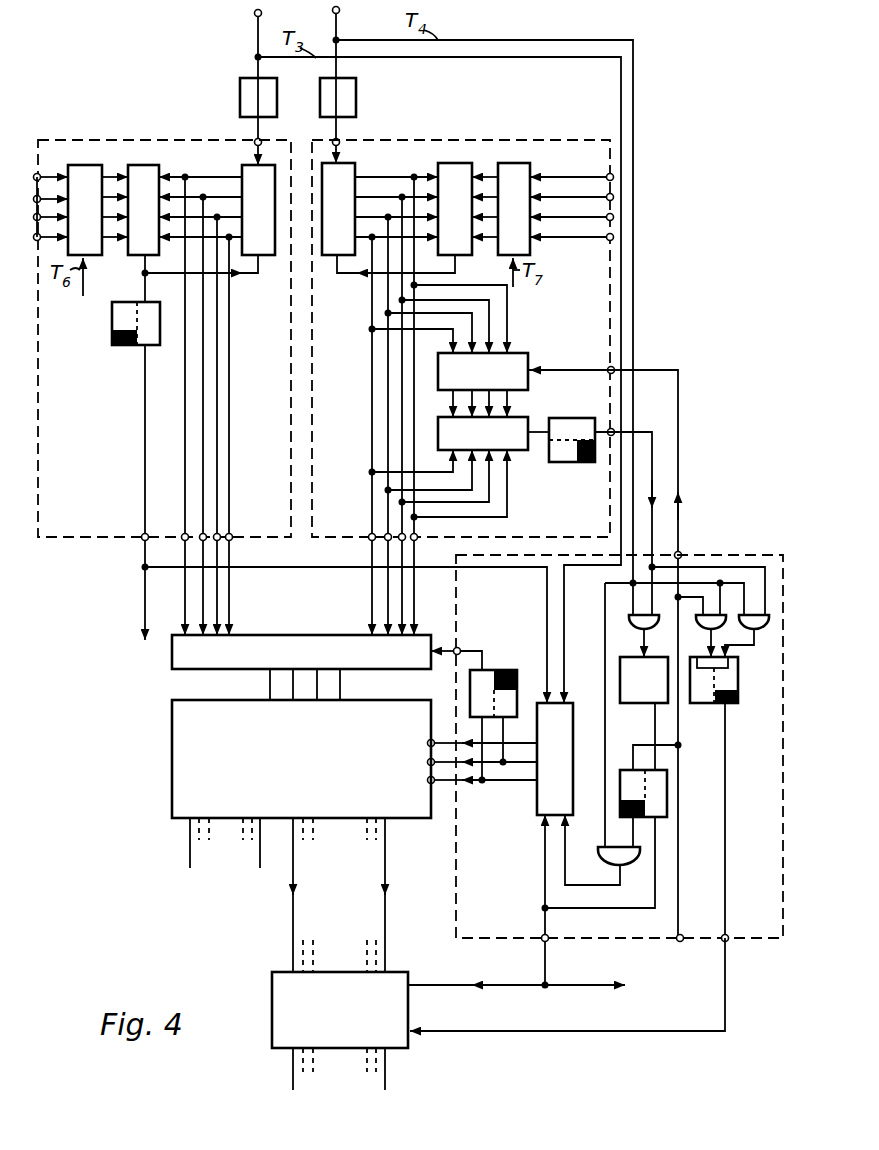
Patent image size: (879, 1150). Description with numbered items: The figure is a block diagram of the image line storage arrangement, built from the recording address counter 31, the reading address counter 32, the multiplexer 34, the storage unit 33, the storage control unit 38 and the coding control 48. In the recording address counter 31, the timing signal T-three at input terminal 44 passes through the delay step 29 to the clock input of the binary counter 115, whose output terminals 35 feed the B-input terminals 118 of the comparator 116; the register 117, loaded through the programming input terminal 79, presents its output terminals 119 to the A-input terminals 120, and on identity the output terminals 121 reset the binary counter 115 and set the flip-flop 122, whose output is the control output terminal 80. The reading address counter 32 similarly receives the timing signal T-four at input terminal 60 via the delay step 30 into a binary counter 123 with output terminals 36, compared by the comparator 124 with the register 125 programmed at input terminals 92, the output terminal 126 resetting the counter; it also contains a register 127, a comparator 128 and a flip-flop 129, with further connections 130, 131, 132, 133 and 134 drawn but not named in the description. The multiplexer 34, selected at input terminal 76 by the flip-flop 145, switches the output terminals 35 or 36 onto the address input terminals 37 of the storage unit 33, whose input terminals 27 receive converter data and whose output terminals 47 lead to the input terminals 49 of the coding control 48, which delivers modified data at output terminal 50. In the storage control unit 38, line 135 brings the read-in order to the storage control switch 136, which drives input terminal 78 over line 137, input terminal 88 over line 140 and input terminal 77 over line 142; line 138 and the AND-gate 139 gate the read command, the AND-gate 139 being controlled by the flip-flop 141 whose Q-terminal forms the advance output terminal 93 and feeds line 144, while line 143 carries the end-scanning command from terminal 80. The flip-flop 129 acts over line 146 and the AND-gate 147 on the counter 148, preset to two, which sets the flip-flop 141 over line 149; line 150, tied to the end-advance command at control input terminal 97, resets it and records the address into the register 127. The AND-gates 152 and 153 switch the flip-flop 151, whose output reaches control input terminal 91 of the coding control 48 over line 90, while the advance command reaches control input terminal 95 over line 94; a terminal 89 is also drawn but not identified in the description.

The input terminal 44 is at (254, 13).
The input terminal 60 is at (340, 10).
The delay step 29 is at (254, 90).
The delay step 30 is at (338, 92).
The line 135 is at (621, 90).
The line 138 is at (633, 130).
The recording address counter 31 is at (62, 538).
The programming input terminal 79 is at (36, 194).
The register 117 is at (82, 176).
The comparator 116 is at (140, 170).
The output terminals of the register 119 is at (110, 200).
The binary counter 115 is at (247, 176).
The B-input terminals of the comparator 118 is at (159, 214).
The output terminals of the comparator 121 is at (146, 264).
The A-input terminals of the comparator 120 is at (117, 323).
The flip-flop 122 is at (134, 338).
The control output terminal 80 is at (142, 541).
The line 143 is at (360, 571).
The output terminals of the recording address counter 35 is at (210, 529).
The reading address counter 32 is at (344, 532).
The binary counter 123 is at (342, 178).
The comparator 124 is at (454, 164).
The register 125 is at (514, 168).
The connecting lines 130 is at (480, 346).
The programming input terminals 92 is at (609, 214).
The output terminal of the comparator 126 is at (456, 256).
The register 127 is at (510, 380).
The connecting lines 132 is at (485, 390).
The connecting lines 133 is at (498, 411).
The comparator 128 is at (496, 465).
The line 134 is at (524, 436).
The connecting lines 131 is at (470, 460).
The flip-flop 129 is at (578, 426).
The output terminals of the reading address counter 36 is at (376, 526).
The line 150 is at (656, 370).
The line 146 is at (644, 428).
The storage control unit 38 is at (456, 900).
The selection input terminal 76 is at (457, 648).
The flip-flop 145 is at (486, 670).
The line 142 is at (517, 736).
The line 137 is at (520, 768).
The input terminal 78 is at (448, 778).
The storage control switch 136 is at (564, 720).
The AND-gate 147 is at (636, 636).
The counter 148 is at (648, 696).
The line 149 is at (654, 702).
The AND-gate 152 is at (702, 570).
The AND-gate 153 is at (750, 568).
The flip-flop 151 is at (730, 686).
The line 90 is at (726, 886).
The flip-flop 141 is at (664, 812).
The AND-gate 139 is at (622, 858).
The line 144 is at (544, 899).
The line 140 is at (523, 900).
The control output terminal 93 is at (544, 940).
The control input terminal 97 is at (678, 938).
The terminal 89 is at (730, 942).
The line 94 is at (490, 986).
The control input terminal 95 is at (411, 982).
The control input terminal 91 is at (412, 1032).
The multiplexer 34 is at (174, 660).
The address input terminals 37 is at (300, 695).
The input terminal 77 is at (432, 742).
The input terminal 88 is at (435, 784).
The storage unit 33 is at (194, 750).
The input terminals 27 is at (216, 834).
The output terminals 47 is at (328, 834).
The input terminals 49 is at (334, 952).
The coding control 48 is at (294, 996).
The output terminal 50 is at (334, 1058).